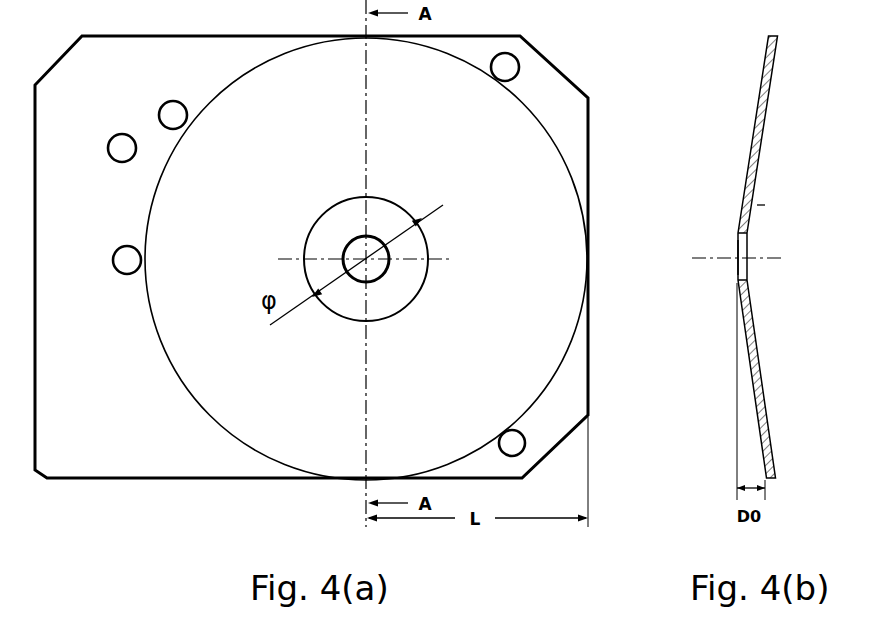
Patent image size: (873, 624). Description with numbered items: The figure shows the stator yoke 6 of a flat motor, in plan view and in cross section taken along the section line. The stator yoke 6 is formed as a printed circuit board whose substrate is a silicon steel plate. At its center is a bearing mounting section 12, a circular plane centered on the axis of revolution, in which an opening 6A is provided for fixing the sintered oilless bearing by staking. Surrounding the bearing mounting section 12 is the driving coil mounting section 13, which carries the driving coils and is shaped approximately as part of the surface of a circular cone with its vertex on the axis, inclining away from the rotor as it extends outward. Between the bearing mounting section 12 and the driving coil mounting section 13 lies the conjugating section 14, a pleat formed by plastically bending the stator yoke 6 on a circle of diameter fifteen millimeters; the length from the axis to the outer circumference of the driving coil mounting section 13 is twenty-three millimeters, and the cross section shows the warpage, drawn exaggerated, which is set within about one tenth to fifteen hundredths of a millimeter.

In FIG. 4A, the stator yoke 6 is at (545, 97).
In FIG. 4B, the stator yoke 6 is at (730, 257).
In FIG. 4A, the driving coil mounting section 13 is at (436, 82).
In FIG. 4B, the driving coil mounting section 13 is at (759, 98).
In FIG. 4A, the conjugating section 14 is at (407, 206).
In FIG. 4B, the conjugating section 14 is at (741, 196).
In FIG. 4A, the bearing mounting section 12 is at (405, 238).
In FIG. 4B, the bearing mounting section 12 is at (740, 212).
In FIG. 4A, the opening 6A is at (368, 271).
In FIG. 4B, the opening 6A is at (738, 265).